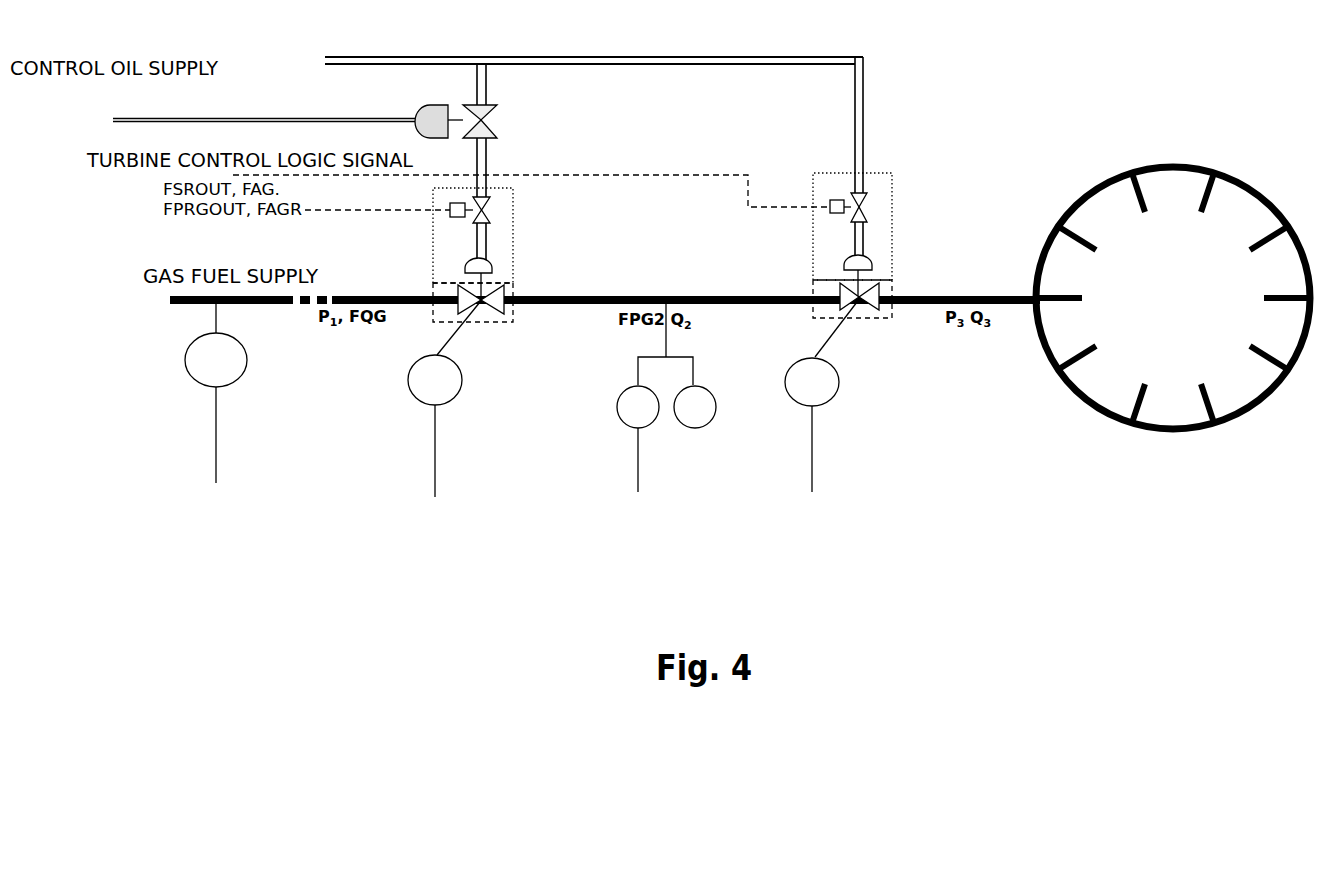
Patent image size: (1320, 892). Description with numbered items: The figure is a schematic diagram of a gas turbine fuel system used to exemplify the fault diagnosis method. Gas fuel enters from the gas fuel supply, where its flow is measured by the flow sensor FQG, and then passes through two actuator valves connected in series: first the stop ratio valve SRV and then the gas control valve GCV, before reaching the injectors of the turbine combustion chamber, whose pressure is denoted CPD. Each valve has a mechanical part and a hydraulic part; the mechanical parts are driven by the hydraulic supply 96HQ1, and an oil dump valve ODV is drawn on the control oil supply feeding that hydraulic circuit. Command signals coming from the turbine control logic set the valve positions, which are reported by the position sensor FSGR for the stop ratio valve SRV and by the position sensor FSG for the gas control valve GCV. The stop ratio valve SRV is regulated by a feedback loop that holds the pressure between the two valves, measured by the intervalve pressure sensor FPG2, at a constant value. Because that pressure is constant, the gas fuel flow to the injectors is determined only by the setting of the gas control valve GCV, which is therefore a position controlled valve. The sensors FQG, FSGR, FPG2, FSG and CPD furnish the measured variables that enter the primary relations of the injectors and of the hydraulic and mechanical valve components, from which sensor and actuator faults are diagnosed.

The hydraulic supply pressure 96HQ1 is at (538, 108).
The oil dump valve ODV is at (545, 121).
The stop ratio valve SRV is at (494, 255).
The gas control valve GCV is at (883, 245).
The gas fuel flow sensor FQG is at (216, 408).
The stop ratio valve position sensor FSGR is at (444, 414).
The intervalve pressure sensor FPG2 is at (666, 414).
The gas control valve position sensor FSG is at (821, 413).
The combustion chamber pressure CPD is at (1142, 192).